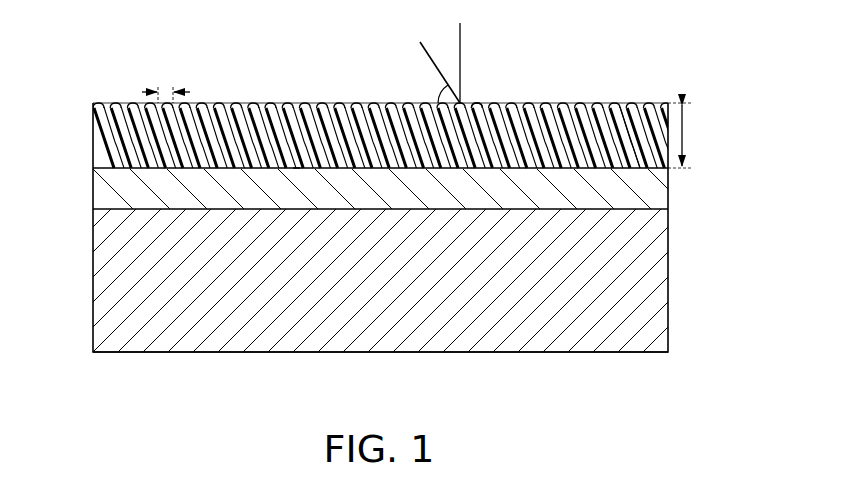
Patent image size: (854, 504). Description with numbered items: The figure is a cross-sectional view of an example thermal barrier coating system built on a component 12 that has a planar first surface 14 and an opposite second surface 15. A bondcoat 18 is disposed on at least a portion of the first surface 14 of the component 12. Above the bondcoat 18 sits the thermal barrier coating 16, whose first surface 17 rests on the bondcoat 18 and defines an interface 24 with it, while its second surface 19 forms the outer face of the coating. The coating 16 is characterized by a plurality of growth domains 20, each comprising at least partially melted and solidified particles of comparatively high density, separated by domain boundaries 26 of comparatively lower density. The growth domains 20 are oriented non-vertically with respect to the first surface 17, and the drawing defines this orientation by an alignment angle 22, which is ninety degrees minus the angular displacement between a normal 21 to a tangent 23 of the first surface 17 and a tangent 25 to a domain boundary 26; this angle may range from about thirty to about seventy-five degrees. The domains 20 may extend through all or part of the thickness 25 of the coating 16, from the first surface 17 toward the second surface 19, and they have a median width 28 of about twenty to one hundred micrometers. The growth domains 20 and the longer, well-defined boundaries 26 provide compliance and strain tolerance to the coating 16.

The component 12 is at (100, 287).
The first surface 14 is at (662, 208).
The second surface 15 is at (652, 353).
The thermal barrier coating 16 is at (91, 106).
The first surface 17 is at (643, 170).
The bondcoat 18 is at (97, 200).
The second surface 19 is at (646, 102).
The growth domains 20 is at (350, 104).
The normal 21 is at (461, 42).
The alignment angle 22 is at (444, 84).
The tangent 23 is at (483, 102).
The interface 24 is at (630, 165).
The thickness 25 is at (430, 62).
The domain boundaries 26 is at (296, 104).
The width 28 is at (165, 88).